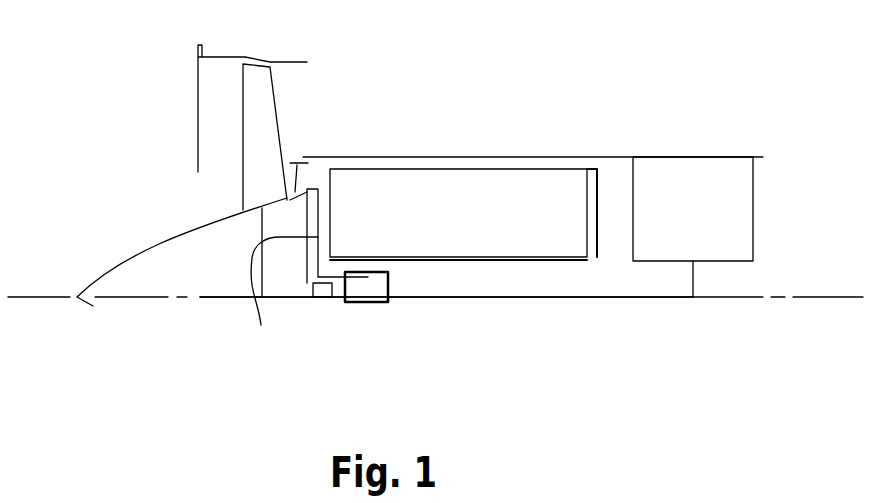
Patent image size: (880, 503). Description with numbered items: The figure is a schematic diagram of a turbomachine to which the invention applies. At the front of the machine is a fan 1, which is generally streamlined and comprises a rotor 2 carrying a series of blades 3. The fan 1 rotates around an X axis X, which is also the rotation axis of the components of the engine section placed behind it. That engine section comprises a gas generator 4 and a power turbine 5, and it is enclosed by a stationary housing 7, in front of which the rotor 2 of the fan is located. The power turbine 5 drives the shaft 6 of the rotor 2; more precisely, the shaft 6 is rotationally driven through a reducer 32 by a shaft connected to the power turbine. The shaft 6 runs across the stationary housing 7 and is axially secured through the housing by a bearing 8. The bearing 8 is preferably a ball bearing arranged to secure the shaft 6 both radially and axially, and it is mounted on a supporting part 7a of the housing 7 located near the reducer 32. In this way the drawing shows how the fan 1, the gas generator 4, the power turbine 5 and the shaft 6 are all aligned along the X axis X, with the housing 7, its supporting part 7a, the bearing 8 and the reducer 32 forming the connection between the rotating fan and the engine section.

The fan 1 is at (160, 164).
The rotor 2 is at (160, 285).
The blades 3 is at (232, 100).
The gas generator 4 is at (442, 205).
The power turbine 5 is at (670, 197).
The shaft 6 is at (282, 297).
The stationary housing 7 is at (318, 190).
The supporting part 7a is at (280, 296).
The bearing 8 is at (323, 297).
The reducer 32 is at (377, 302).
The X axis X is at (37, 297).